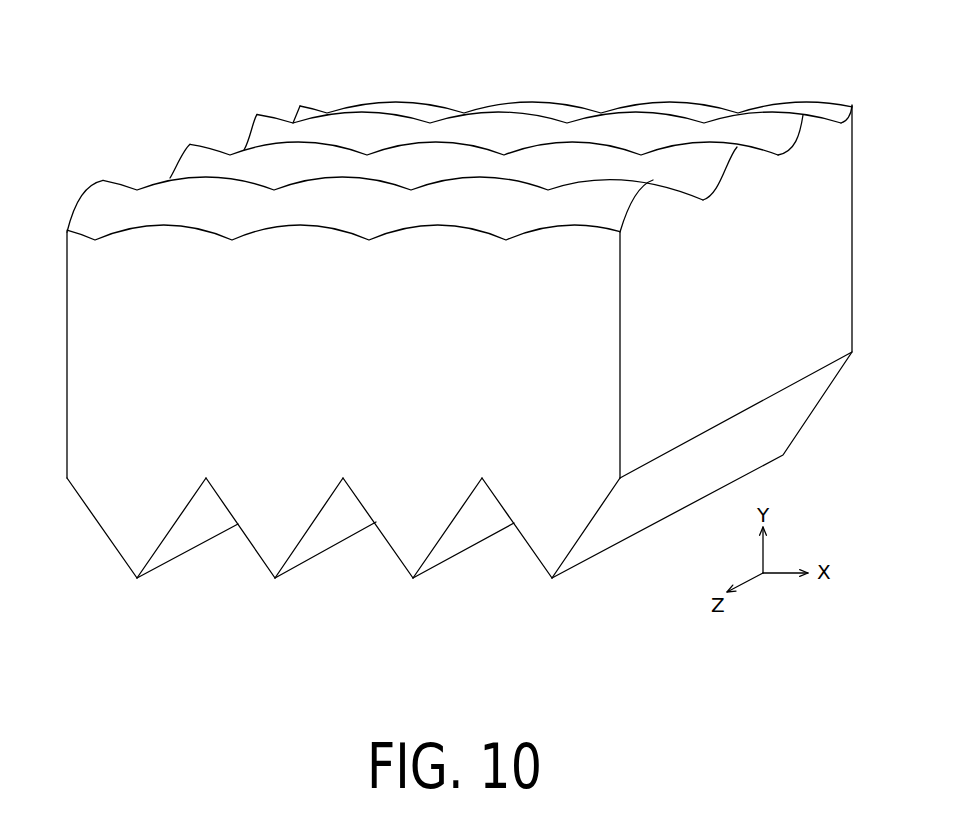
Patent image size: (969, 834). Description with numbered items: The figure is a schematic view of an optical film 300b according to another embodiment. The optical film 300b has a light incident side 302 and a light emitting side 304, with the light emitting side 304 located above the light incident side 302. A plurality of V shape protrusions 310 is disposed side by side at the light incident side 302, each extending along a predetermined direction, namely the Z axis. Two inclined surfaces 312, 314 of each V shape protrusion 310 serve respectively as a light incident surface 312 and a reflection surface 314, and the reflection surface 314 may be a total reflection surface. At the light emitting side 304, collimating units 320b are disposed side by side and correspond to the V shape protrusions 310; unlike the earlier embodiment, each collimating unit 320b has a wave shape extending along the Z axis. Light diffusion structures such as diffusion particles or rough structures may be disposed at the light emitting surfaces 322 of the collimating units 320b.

The optical film 300b is at (652, 632).
The light incident side 302 is at (92, 535).
The light emitting side 304 is at (145, 157).
The V shape protrusion 310 is at (258, 543).
The inclined surface 312 is at (395, 550).
The reflection surface 314 is at (462, 507).
The collimating unit 320b is at (812, 92).
The light emitting surface 322 is at (707, 157).